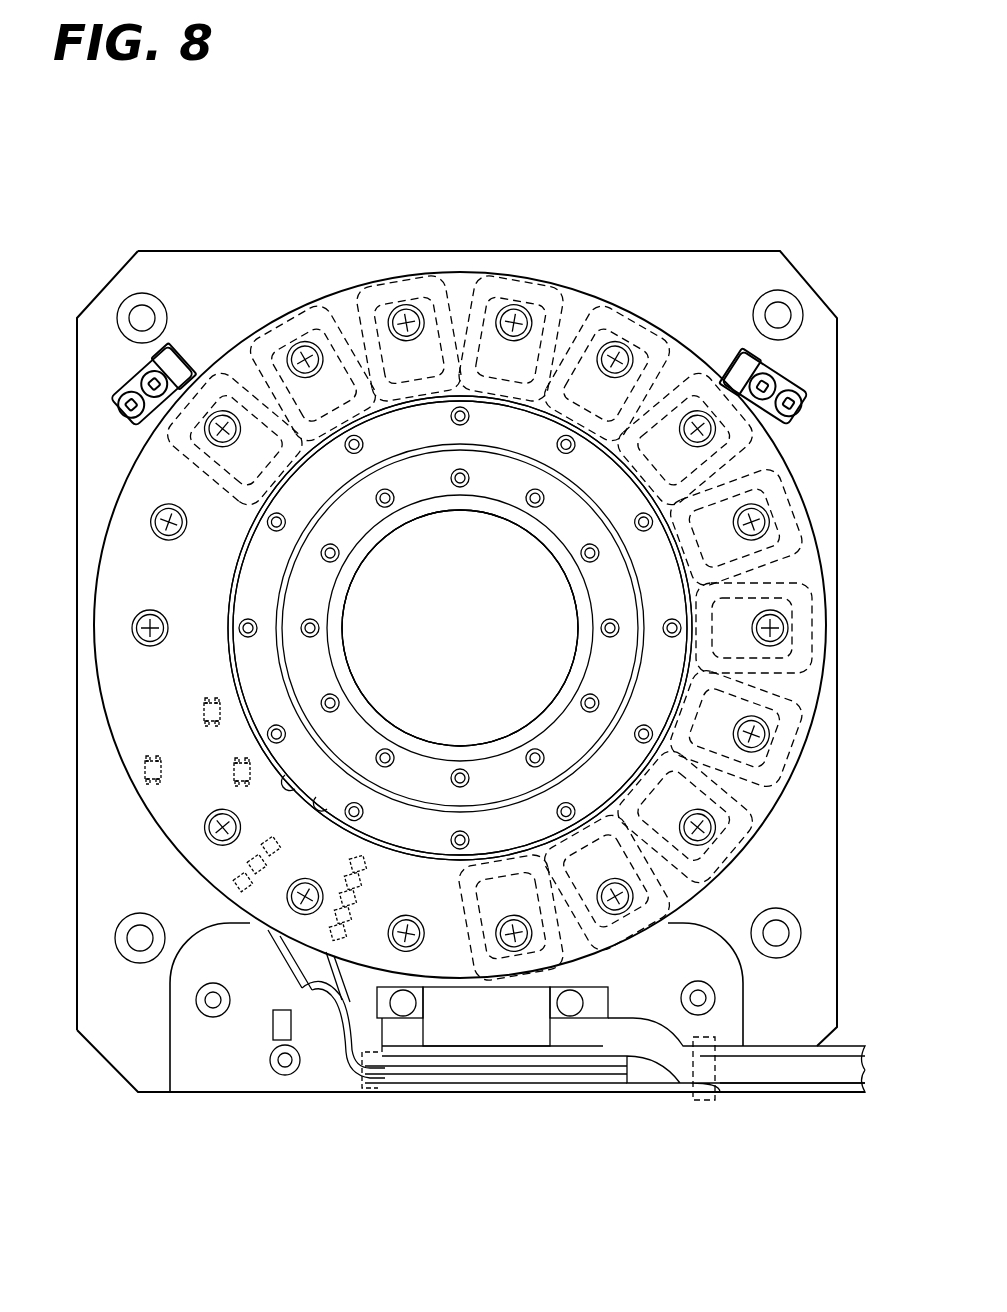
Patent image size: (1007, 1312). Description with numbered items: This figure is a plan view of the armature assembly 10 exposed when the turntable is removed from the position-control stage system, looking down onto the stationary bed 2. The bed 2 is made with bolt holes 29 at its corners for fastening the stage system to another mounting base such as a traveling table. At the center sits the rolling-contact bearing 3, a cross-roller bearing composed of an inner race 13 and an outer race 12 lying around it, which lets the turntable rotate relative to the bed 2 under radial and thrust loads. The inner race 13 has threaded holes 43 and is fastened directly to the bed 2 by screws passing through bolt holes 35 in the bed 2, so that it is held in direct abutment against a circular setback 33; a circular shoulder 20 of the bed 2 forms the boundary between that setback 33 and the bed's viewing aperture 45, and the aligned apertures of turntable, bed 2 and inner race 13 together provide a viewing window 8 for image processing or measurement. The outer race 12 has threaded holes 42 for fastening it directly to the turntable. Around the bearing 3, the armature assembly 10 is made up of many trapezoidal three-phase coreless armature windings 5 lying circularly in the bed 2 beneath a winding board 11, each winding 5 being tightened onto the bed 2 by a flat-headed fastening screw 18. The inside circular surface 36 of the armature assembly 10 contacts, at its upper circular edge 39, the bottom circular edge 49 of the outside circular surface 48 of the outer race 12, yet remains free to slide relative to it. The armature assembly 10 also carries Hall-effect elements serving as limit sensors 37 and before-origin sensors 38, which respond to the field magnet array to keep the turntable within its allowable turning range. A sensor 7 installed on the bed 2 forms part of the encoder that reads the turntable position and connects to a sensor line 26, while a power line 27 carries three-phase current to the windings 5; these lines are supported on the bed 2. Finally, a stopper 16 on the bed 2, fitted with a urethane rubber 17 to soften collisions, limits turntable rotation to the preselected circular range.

The stationary bed 2 is at (702, 275).
The rolling-contact bearing 3 is at (678, 607).
The armature windings 5 is at (517, 290).
The sensor 7 is at (475, 1030).
The viewing window 8 is at (420, 737).
The armature assembly 10 is at (580, 310).
The winding board 11 is at (165, 490).
The outer race 12 is at (668, 655).
The inner race 13 is at (578, 600).
The stopper 16 is at (137, 382).
The urethane rubber 17 is at (184, 360).
The flat-headed fastening screw 18 is at (405, 310).
The circular shoulder 20 is at (530, 522).
The sensor line 26 is at (833, 1065).
The power line 27 is at (817, 1087).
The bolt holes 29 is at (778, 315).
The circular setback 33 is at (575, 520).
The bolt holes 35 is at (336, 560).
The inside circular surface 36 is at (322, 806).
The limit sensors 37 is at (230, 780).
The before-origin sensors 38 is at (203, 712).
The upper circular edge 39 is at (507, 852).
The threaded holes 42 is at (240, 626).
The threaded holes 43 is at (388, 503).
The viewing aperture 45 is at (465, 517).
The outside circular surface 48 is at (283, 783).
The bottom circular edge 49 is at (445, 855).